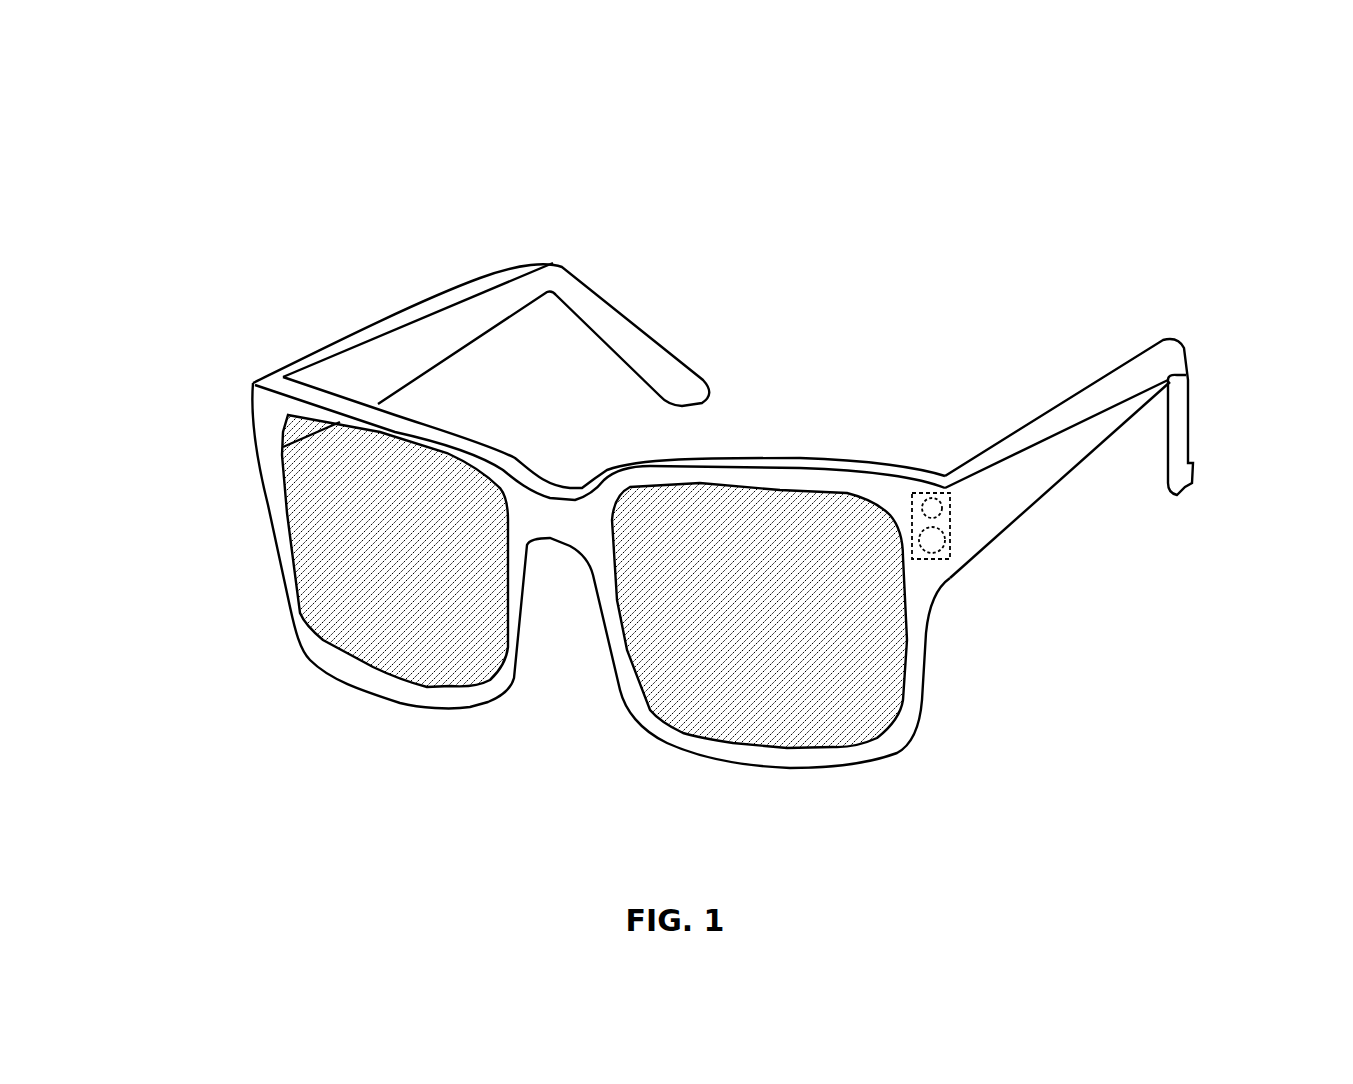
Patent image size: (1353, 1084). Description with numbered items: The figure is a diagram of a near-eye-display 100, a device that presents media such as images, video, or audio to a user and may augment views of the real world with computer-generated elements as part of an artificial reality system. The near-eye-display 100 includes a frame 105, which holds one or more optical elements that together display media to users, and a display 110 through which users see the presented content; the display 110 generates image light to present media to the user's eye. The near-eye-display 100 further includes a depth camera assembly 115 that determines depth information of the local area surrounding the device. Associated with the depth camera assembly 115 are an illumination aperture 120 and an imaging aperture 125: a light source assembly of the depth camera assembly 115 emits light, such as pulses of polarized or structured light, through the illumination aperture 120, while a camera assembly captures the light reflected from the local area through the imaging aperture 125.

The near-eye-display 100 is at (806, 113).
The frame 105 is at (977, 435).
The display 110 is at (333, 550).
The depth camera assembly 115 is at (910, 493).
The illumination aperture 120 is at (940, 513).
The imaging aperture 125 is at (932, 549).